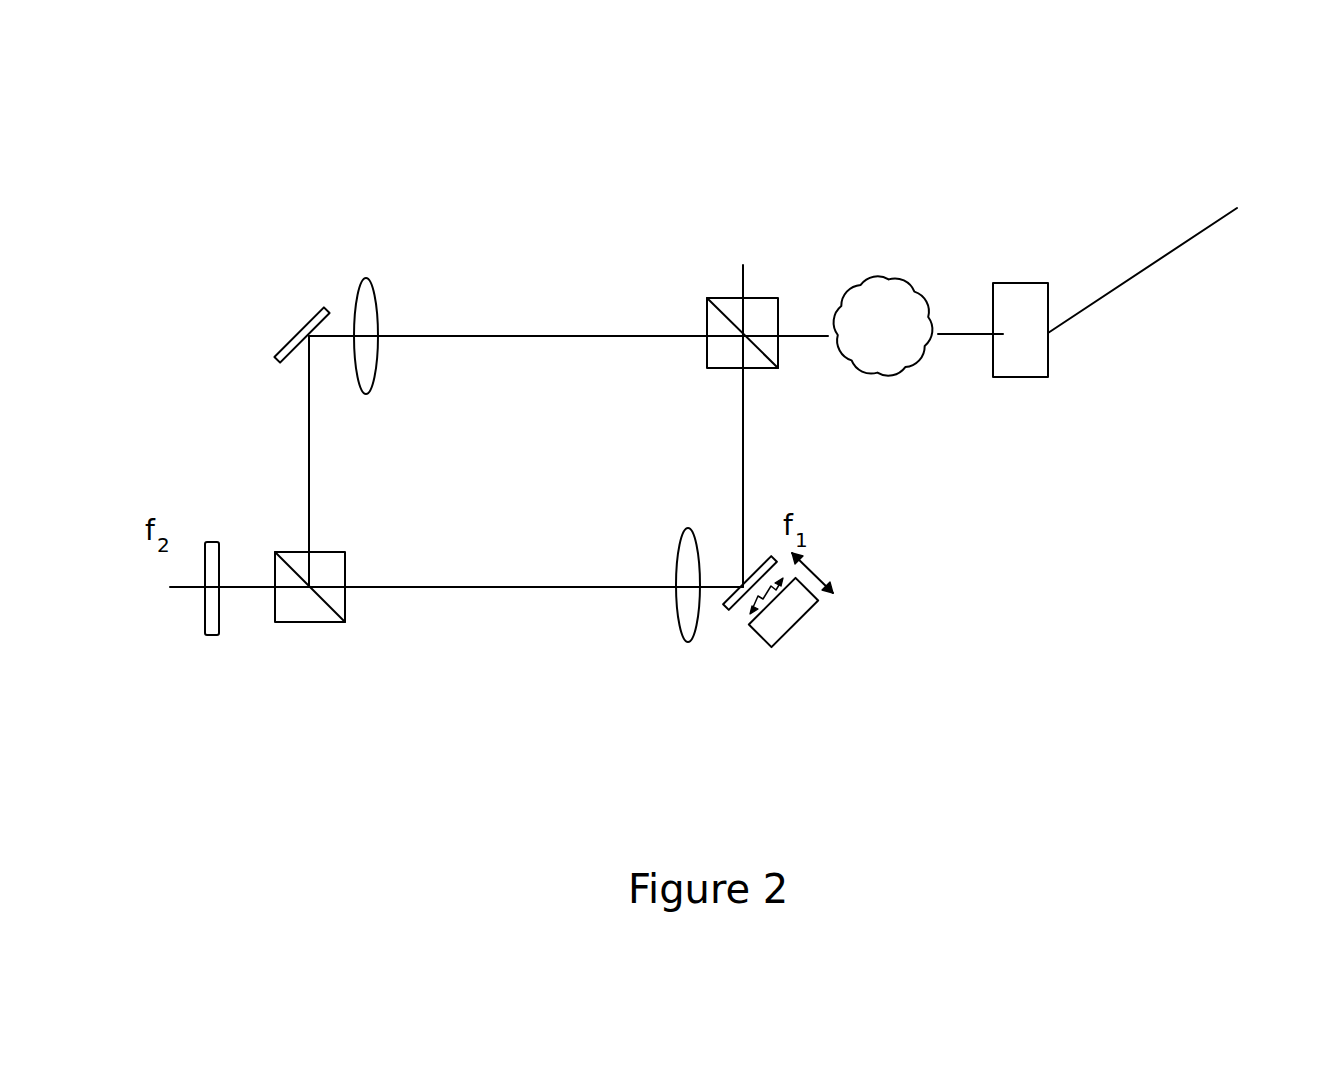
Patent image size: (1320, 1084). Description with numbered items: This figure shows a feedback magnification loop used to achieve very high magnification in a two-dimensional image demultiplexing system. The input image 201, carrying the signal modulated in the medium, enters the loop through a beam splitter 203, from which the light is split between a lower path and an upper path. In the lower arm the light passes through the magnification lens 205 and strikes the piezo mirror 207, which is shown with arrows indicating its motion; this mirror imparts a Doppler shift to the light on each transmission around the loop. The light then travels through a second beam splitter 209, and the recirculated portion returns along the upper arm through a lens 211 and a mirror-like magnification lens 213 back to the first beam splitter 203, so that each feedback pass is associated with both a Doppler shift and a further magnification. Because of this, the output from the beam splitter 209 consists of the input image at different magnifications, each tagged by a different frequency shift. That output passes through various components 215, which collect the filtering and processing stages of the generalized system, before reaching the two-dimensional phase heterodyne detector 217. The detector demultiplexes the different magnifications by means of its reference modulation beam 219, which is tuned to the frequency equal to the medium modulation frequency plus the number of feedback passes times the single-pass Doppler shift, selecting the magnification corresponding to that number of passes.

The input image 201 is at (213, 638).
The beam splitter 203 is at (309, 622).
The magnification lens 205 is at (687, 640).
The piezo mirror 207 is at (777, 646).
The beam splitter 209 is at (730, 298).
The lens 211 is at (366, 272).
The magnification lens 213 is at (292, 340).
The various components 215 is at (910, 368).
The homodyne heterodyne detector 217 is at (1022, 283).
The reference modulation beam 219 is at (1212, 222).